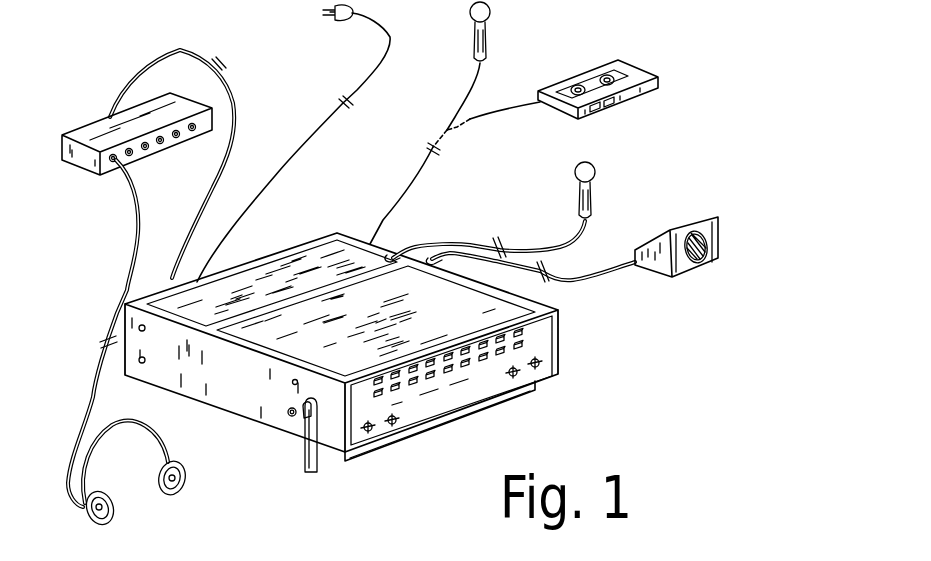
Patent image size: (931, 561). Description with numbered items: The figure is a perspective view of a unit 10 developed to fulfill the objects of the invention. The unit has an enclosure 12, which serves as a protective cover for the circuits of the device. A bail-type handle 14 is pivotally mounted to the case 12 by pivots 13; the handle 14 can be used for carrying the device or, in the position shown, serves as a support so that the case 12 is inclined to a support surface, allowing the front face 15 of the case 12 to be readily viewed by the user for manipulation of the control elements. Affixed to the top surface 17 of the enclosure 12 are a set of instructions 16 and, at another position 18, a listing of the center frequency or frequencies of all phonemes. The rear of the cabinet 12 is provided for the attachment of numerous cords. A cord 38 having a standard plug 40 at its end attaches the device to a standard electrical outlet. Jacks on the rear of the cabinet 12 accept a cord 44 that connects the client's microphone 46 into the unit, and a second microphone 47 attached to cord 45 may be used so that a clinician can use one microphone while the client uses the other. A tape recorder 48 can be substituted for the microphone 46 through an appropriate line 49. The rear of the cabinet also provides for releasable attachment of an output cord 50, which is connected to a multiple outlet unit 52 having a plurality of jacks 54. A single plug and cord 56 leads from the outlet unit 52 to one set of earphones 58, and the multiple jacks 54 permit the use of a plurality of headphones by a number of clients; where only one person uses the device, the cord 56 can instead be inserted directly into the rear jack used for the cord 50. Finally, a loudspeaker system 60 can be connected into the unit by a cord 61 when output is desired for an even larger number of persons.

The unit 10 is at (567, 405).
The enclosure 12 is at (303, 240).
The pivot 13 is at (308, 420).
The bail-type handle 14 is at (305, 480).
The front face 15 is at (553, 347).
The set of instructions 16 is at (297, 262).
The top surface 17 is at (392, 253).
The listing of center frequencies of phonemes 18 is at (540, 292).
The cord 38 is at (387, 50).
The standard plug 40 is at (330, 21).
The cord 44 is at (473, 78).
The cord 45 is at (537, 247).
The microphone 46 is at (487, 38).
The second microphone 47 is at (590, 195).
The tape recorder 48 is at (638, 67).
The line 49 is at (477, 117).
The output cord 50 is at (232, 87).
The multiple outlet unit 52 is at (93, 177).
The jacks 54 is at (163, 147).
The plug and cord 56 is at (90, 397).
The earphones 58 is at (170, 447).
The loudspeaker system 60 is at (697, 227).
The cord 61 is at (598, 260).